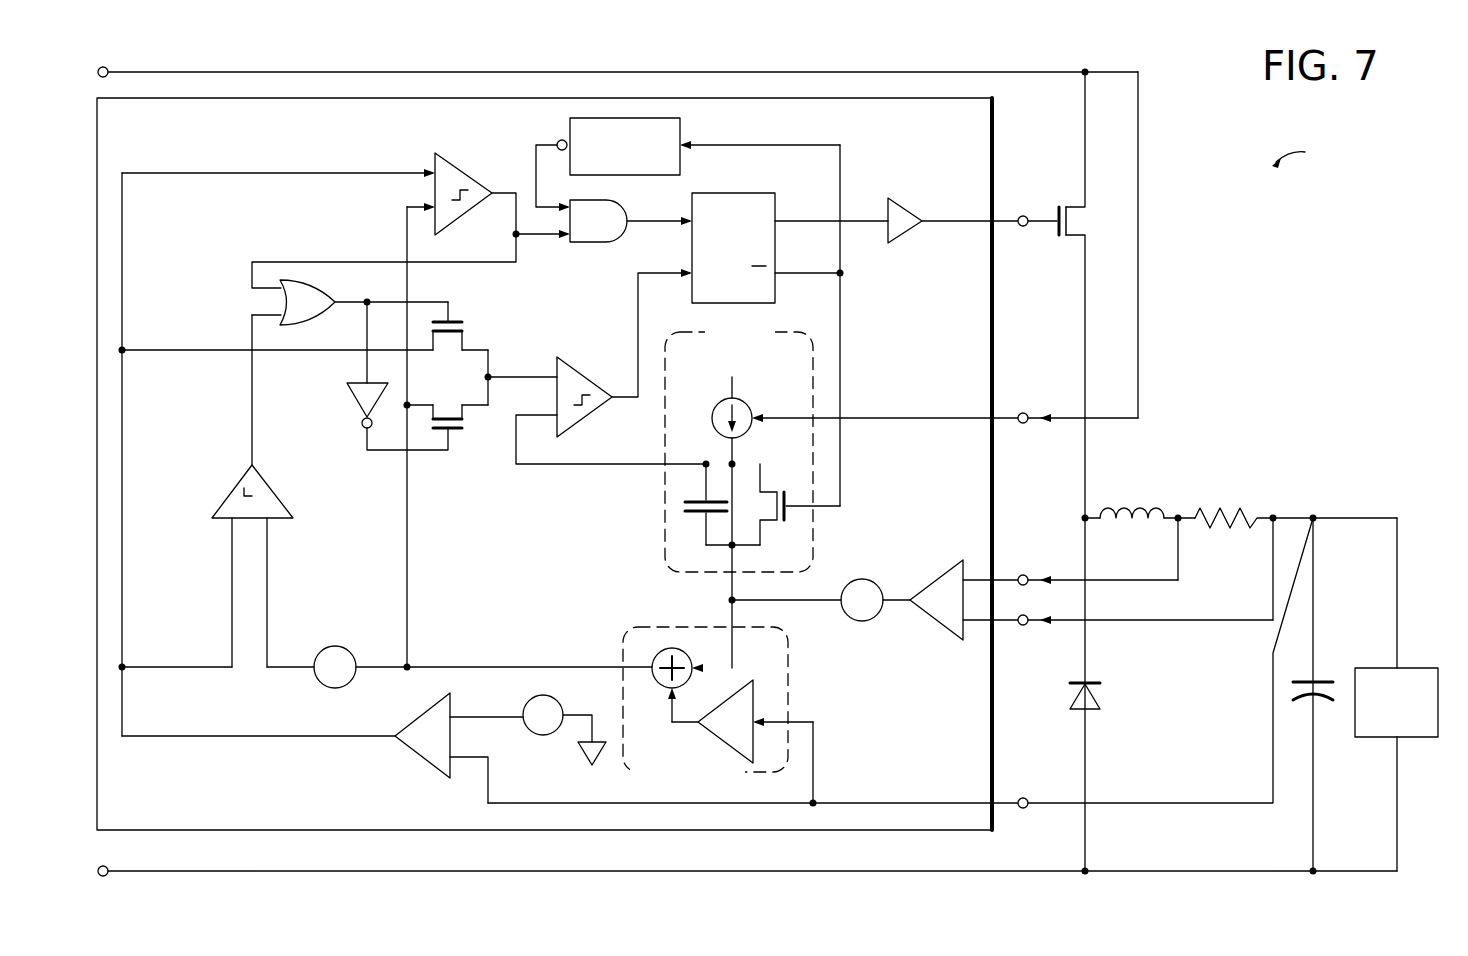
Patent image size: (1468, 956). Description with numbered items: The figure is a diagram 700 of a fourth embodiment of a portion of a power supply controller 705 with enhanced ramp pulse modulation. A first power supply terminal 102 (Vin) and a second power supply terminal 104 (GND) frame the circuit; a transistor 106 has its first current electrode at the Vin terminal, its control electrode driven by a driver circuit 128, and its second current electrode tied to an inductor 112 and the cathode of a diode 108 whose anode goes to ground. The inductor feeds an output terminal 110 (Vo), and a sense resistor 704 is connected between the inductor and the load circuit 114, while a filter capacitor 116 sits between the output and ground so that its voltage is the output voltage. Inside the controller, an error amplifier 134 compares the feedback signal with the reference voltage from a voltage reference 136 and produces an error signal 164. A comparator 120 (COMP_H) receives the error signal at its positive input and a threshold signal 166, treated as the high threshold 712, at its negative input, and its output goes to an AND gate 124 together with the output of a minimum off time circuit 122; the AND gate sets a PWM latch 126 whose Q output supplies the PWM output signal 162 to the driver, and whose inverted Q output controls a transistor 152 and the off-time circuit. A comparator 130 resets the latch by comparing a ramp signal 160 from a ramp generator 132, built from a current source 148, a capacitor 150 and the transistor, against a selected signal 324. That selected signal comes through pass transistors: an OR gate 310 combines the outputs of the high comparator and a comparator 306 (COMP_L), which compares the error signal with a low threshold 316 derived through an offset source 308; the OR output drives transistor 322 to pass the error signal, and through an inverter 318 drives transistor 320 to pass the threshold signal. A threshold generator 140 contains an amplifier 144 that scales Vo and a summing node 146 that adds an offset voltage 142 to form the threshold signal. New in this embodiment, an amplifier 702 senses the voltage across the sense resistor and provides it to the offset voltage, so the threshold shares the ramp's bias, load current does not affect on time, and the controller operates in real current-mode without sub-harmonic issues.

The first power supply terminal 102 is at (204, 74).
The second power supply terminal 104 is at (204, 872).
The transistor 106 is at (1075, 218).
The diode 108 is at (1100, 683).
The output terminal 110 is at (1360, 518).
The inductor 112 is at (1125, 498).
The load circuit 114 is at (1420, 668).
The filter capacitor 116 is at (1330, 682).
The comparator 120 is at (462, 170).
The minimum off time circuit 122 is at (683, 122).
The AND gate 124 is at (596, 244).
The PWM latch 126 is at (748, 192).
The driver circuit 128 is at (905, 205).
The comparator 130 is at (592, 370).
The ramp generator 132 is at (665, 510).
The error amplifier 134 is at (411, 712).
The voltage reference 136 is at (538, 736).
The threshold generator 140 is at (789, 688).
The offset voltage 142 is at (858, 622).
The amplifier 144 is at (750, 688).
The summing node 146 is at (654, 660).
The current source 148 is at (712, 416).
The capacitor 150 is at (692, 515).
The transistor 152 is at (787, 490).
The ramp signal 160 is at (635, 492).
The PWM output signal 162 is at (836, 247).
The error signal 164 is at (285, 763).
The threshold signal 166 is at (483, 660).
The comparator 306 is at (236, 480).
The offset voltage source Vos2 308 is at (342, 646).
The OR gate 310 is at (322, 320).
The low threshold 316 is at (280, 575).
The inverter 318 is at (350, 398).
The transistor 320 is at (452, 432).
The transistor 322 is at (448, 336).
The selected signal 324 is at (549, 370).
The diagram 700 is at (1310, 151).
The amplifier 702 is at (938, 640).
The sense resistor 704 is at (1232, 506).
The power supply controller 705 is at (993, 137).
The high threshold signal 712 is at (420, 550).